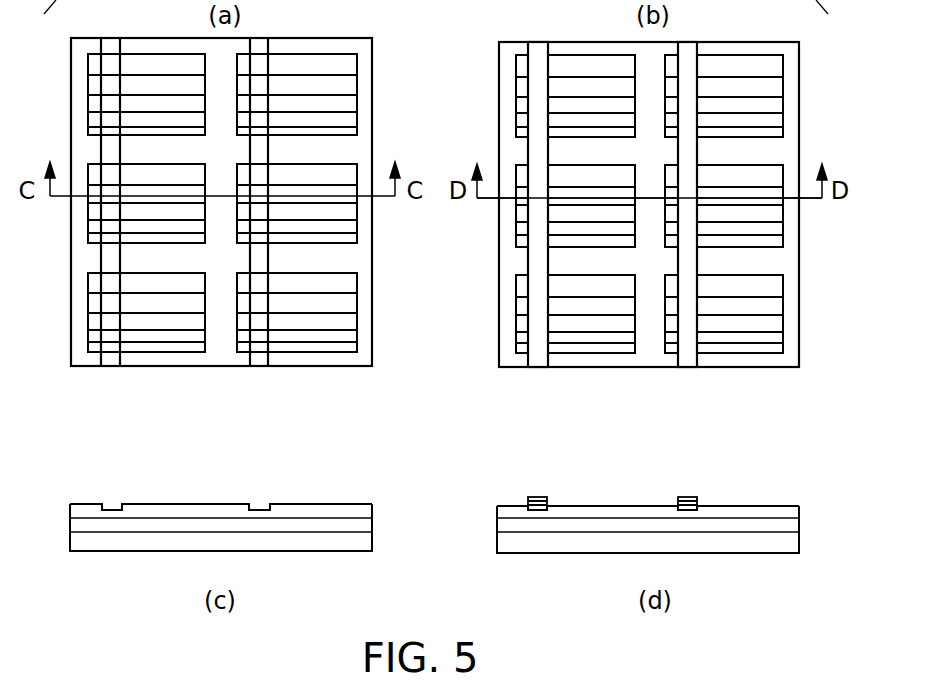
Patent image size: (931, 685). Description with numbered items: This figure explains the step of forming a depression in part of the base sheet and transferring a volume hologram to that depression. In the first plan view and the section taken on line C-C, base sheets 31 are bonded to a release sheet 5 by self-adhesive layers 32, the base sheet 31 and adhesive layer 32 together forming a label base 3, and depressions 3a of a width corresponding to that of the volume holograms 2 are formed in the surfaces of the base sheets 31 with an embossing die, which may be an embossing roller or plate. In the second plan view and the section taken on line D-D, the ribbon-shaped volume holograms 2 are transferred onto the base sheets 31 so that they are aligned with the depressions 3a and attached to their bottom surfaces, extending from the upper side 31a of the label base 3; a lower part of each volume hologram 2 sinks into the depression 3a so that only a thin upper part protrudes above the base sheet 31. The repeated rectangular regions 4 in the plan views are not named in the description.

The volume hologram structure 2 is at (538, 352).
The label base 3 is at (372, 272).
The depression 3a is at (108, 358).
The photoelectric conversion cell 4 is at (333, 313).
The release sheet 5 is at (372, 327).
The base sheet 31 is at (298, 513).
The upper side (first end) 31a is at (572, 52).
The self-adhesive layer 32 is at (327, 528).